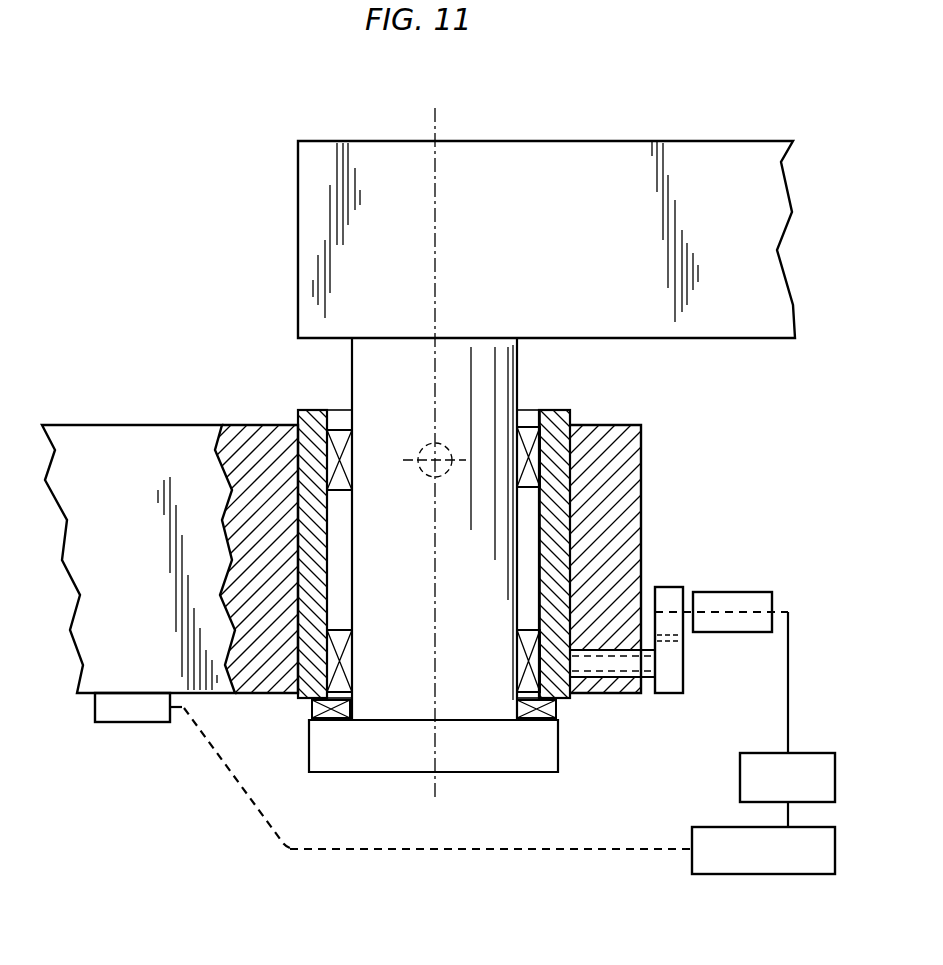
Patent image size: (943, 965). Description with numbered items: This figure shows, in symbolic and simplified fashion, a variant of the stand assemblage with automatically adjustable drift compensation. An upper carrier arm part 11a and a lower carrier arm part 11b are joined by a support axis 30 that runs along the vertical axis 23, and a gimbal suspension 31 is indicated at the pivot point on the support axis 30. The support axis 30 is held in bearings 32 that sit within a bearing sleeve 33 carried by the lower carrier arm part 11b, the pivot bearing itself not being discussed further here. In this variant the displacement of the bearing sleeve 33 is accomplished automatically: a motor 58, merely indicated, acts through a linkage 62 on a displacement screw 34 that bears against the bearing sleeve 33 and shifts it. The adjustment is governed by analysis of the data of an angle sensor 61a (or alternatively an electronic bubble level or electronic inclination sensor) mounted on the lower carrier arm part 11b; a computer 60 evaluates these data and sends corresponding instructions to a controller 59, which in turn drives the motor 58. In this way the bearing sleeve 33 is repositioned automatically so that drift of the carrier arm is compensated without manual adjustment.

The carrier arm part 11a is at (546, 239).
The carrier arm part 11b is at (170, 559).
The vertical axis 23 is at (434, 213).
The support axis 30 is at (350, 383).
The gimbal suspension 31 is at (432, 460).
The bearing 32 is at (530, 435).
The bearing sleeve 33 is at (558, 516).
The displacement screw 34 is at (683, 676).
The motor 58 is at (730, 592).
The controller 59 is at (740, 775).
The computer 60 is at (760, 874).
The angle sensor 61a is at (120, 722).
The linkage 62 is at (668, 587).